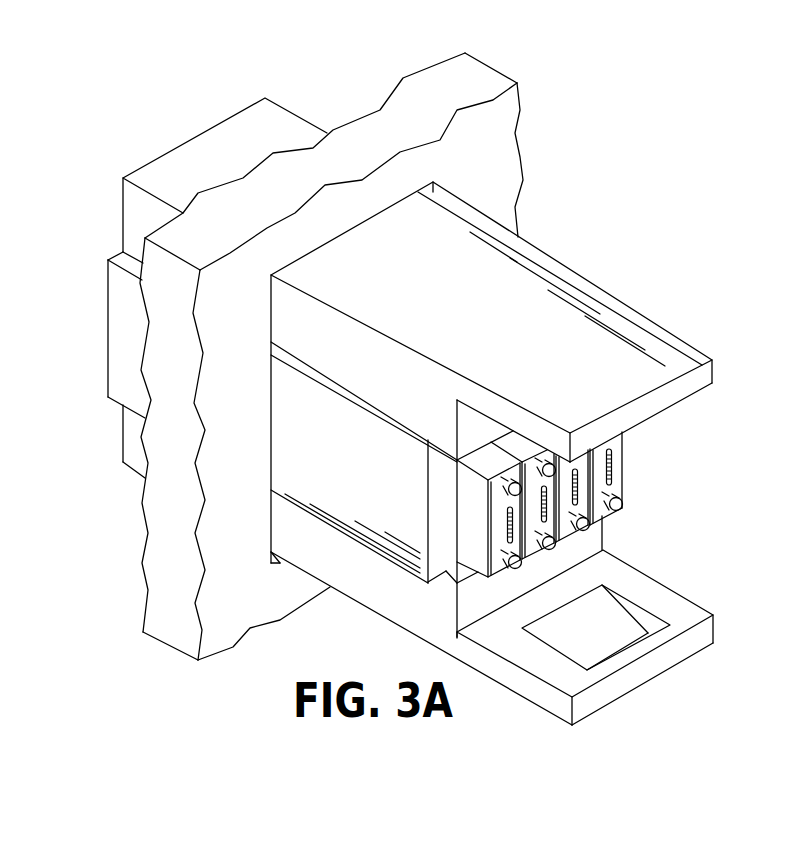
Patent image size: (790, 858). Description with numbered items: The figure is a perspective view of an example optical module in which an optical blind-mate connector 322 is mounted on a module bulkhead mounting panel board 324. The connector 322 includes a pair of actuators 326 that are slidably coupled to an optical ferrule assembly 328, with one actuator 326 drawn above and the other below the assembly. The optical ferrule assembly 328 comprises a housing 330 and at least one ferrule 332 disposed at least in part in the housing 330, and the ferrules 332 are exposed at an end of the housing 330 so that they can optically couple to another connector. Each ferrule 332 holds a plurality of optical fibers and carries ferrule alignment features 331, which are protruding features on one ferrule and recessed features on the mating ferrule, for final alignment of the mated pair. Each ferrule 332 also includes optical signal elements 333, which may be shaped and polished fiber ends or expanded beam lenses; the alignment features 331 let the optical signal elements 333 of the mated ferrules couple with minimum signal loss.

The optical blind-mate connector 322 is at (170, 115).
The module bulkhead mounting panel board 324 is at (493, 68).
The actuator 326 is at (653, 318).
The optical ferrule assembly 328 is at (100, 326).
The housing 330 is at (283, 460).
The ferrule alignment features 331 is at (619, 503).
The ferrule 332 is at (624, 480).
The optical signal elements 333 is at (613, 457).